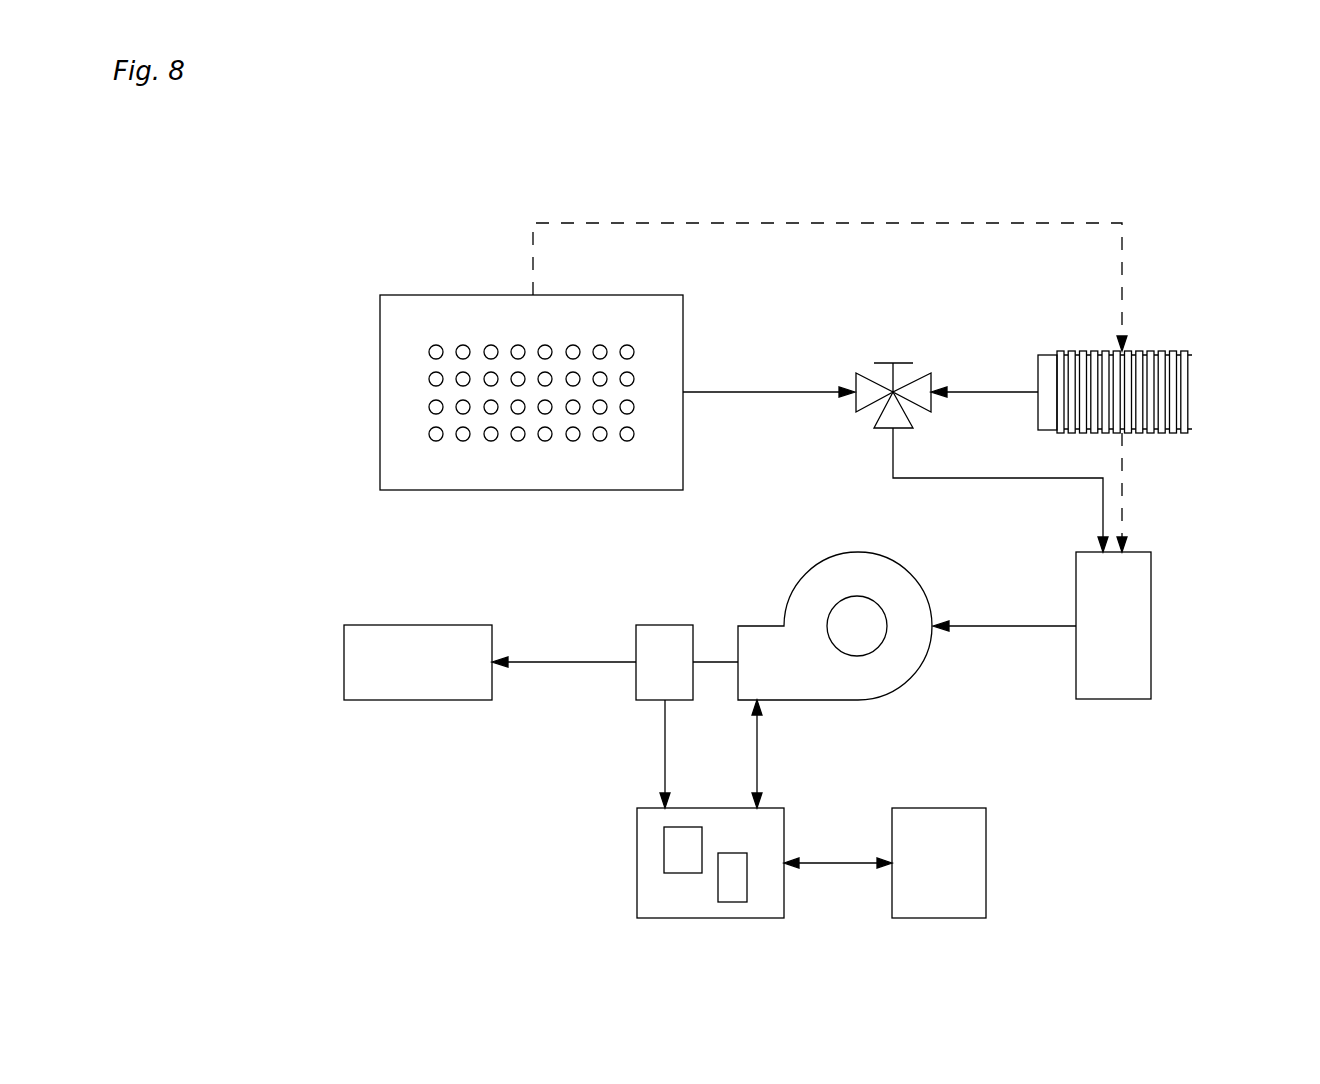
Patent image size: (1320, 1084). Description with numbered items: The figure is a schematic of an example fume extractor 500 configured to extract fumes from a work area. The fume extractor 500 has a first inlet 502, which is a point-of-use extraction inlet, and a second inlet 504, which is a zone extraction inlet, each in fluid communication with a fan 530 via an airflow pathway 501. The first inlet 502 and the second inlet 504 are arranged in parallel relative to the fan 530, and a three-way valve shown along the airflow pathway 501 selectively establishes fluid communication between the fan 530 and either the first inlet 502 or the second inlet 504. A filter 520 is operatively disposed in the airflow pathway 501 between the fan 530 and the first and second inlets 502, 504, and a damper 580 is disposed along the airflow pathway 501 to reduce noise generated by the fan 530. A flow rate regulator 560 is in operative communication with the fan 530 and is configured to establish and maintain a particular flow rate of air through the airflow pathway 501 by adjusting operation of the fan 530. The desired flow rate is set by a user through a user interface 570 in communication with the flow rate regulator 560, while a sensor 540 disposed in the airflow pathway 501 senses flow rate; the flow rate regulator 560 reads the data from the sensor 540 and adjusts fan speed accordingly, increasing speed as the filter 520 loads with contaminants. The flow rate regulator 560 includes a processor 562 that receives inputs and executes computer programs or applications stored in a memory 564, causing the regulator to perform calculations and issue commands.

The fume extractor 500 is at (452, 168).
The airflow pathway 501 is at (983, 222).
The first inlet 502 is at (1197, 361).
The second inlet 504 is at (408, 295).
The filter 520 is at (1151, 590).
The fan 530 is at (812, 578).
The sensor 540 is at (650, 702).
The flow rate regulator 560 is at (648, 920).
The processor 562 is at (664, 842).
The memory 564 is at (735, 902).
The user interface 570 is at (986, 840).
The damper 580 is at (380, 625).